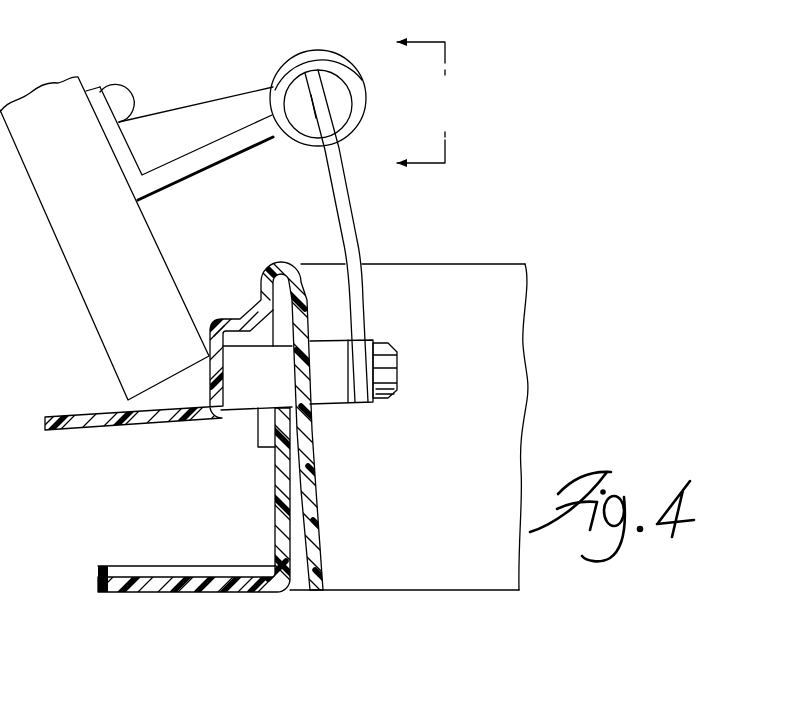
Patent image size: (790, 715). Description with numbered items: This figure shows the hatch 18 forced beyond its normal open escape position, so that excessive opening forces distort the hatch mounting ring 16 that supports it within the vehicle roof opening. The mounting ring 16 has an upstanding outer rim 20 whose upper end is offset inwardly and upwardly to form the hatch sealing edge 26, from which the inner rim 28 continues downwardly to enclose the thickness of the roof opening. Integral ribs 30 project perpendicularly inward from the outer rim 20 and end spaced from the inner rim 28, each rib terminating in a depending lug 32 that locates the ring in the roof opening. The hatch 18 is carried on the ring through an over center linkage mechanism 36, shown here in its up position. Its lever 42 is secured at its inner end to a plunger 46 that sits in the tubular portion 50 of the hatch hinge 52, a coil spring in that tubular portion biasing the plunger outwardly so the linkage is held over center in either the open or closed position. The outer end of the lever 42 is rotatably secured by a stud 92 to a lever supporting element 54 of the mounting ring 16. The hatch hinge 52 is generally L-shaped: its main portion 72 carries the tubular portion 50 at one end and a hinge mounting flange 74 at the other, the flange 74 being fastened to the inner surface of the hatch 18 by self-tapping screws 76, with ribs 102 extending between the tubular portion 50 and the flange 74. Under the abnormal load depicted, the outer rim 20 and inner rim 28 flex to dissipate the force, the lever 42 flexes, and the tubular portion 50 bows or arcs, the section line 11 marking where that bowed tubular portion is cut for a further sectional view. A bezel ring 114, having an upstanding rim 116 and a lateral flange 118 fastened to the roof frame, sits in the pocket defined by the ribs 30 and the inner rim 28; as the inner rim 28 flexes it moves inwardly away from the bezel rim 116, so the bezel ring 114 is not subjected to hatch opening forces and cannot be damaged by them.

The section line 11 is at (420, 123).
The hatch mounting ring 16 is at (254, 275).
The hatch 18 is at (73, 290).
The outer rim 20 is at (212, 372).
The hatch sealing edge 26 is at (287, 262).
The inner rim member 28 is at (313, 493).
The integral ribs 30 is at (253, 332).
The lug or pin-like portion 32 is at (265, 443).
The over center linkage mechanism 36 is at (409, 404).
The lever member 42 is at (346, 236).
The plunger 46 is at (313, 128).
The tubular portion 50 is at (359, 116).
The hatch hinge 52 is at (270, 146).
The lever supporting element 54 is at (345, 408).
The main portion 72 is at (188, 166).
The hinge mounting flange portion 74 is at (95, 87).
The self-tapping screws 76 is at (122, 96).
The stud or bolt member 92 is at (385, 366).
The ribs 102 is at (180, 125).
The bezel ring 114 is at (96, 562).
The upstanding rim of bezel ring 116 is at (283, 528).
The lateral flange of bezel ring 118 is at (127, 587).